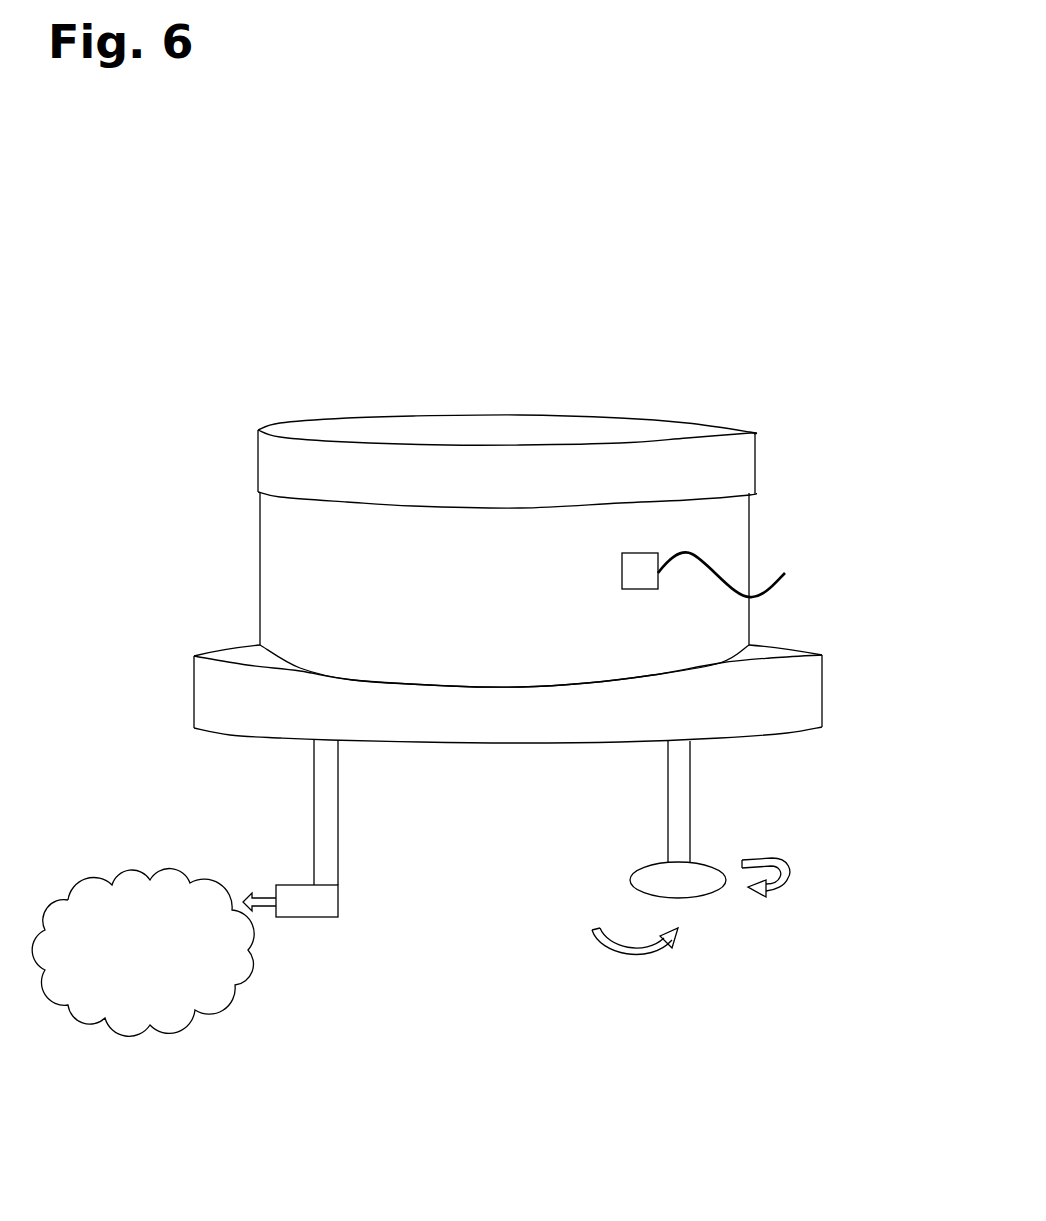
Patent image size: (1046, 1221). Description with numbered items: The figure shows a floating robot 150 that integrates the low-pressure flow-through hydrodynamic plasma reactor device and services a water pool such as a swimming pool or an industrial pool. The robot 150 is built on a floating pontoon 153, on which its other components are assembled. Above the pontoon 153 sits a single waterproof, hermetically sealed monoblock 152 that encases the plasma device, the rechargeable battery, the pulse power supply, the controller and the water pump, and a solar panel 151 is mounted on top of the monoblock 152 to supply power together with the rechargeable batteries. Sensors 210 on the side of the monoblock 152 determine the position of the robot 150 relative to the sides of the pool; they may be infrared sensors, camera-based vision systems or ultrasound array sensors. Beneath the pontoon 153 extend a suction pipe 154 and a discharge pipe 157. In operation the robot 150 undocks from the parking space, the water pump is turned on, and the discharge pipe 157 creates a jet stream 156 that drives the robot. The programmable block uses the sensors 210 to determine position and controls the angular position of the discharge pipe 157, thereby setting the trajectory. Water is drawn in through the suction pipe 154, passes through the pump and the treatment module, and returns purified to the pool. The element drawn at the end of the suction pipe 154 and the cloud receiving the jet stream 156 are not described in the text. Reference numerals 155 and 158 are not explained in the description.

The floating robot 150 is at (147, 112).
The solar panel 151 is at (560, 432).
The monoblock 152 is at (280, 565).
The floating pontoon 153 is at (785, 698).
The suction pipe 154 is at (678, 794).
The rotating platform 155 is at (686, 886).
The jet stream 156 is at (306, 905).
The discharge pipe 157 is at (328, 813).
The network cloud 158 is at (165, 960).
The sensors 210 is at (730, 574).